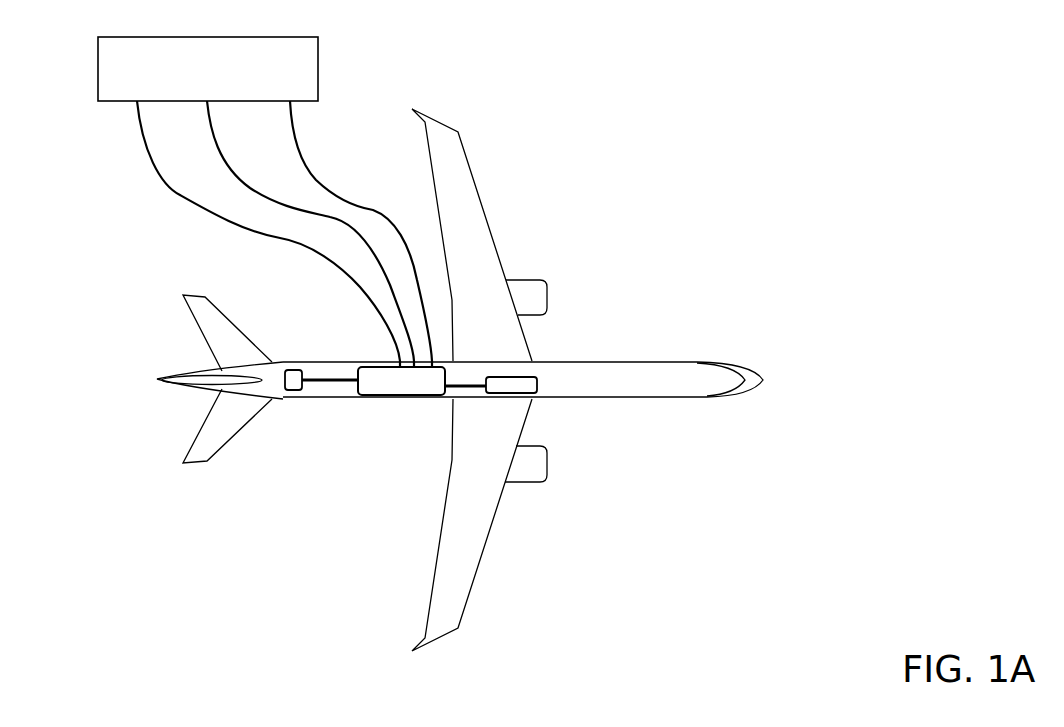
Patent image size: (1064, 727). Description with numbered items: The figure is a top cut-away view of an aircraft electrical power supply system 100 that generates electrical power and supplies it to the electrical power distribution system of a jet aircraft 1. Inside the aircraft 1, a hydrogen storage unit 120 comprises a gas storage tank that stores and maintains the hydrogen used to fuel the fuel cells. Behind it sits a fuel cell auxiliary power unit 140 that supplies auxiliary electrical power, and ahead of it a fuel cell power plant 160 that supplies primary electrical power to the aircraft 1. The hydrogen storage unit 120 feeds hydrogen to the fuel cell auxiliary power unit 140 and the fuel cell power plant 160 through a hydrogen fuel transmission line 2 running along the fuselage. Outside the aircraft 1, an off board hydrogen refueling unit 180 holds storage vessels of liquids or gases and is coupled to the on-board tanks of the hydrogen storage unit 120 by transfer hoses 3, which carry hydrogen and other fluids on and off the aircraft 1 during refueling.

The aircraft electrical power supply system 100 is at (790, 204).
The aircraft 1 is at (668, 362).
The hydrogen fuel transmission line 2 is at (337, 378).
The transfer hoses 3 is at (180, 195).
The hydrogen storage unit 120 is at (382, 400).
The fuel cell auxiliary power unit 140 is at (296, 392).
The fuel cell power plant 160 is at (521, 394).
The off board hydrogen refueling unit 180 is at (208, 69).